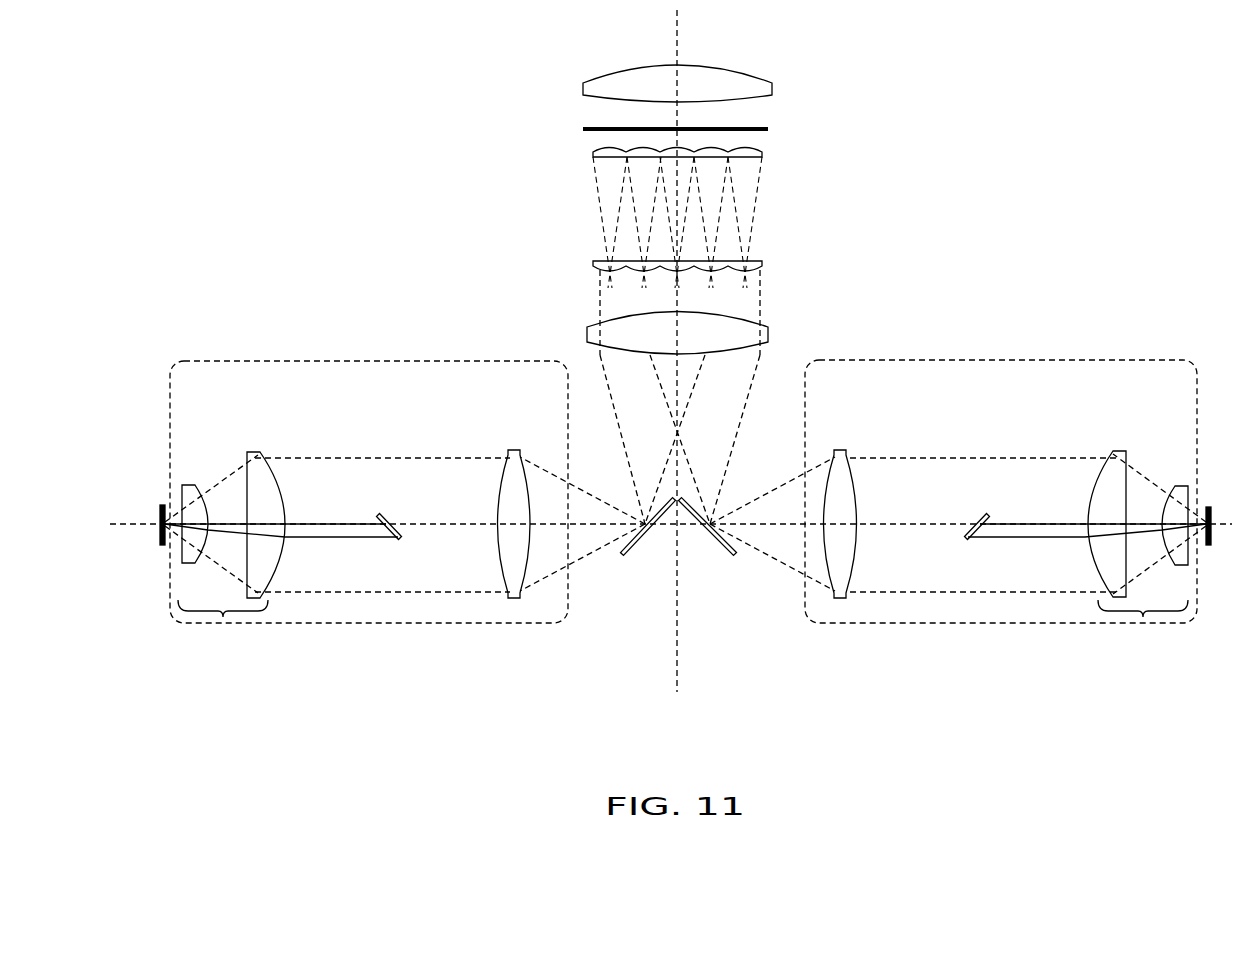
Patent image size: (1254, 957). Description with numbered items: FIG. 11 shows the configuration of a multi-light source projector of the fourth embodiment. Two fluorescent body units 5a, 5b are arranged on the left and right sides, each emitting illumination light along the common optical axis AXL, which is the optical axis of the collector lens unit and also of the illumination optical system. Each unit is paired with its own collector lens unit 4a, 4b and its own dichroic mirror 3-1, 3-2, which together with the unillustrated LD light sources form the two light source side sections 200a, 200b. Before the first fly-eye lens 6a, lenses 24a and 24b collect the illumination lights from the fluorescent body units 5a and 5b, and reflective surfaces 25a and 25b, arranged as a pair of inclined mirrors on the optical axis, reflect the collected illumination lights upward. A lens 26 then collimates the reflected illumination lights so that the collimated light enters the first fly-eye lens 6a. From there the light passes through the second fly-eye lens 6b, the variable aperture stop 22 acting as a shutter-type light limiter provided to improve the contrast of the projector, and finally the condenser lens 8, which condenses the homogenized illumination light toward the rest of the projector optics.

The condenser lens 8 is at (772, 84).
The variable aperture stop 22 is at (768, 129).
The second fly-eye lens 6b is at (762, 152).
The first fly-eye lens 6a is at (762, 262).
The lens 26 is at (768, 327).
The lens 24a is at (513, 450).
The lens 24b is at (845, 450).
The optical axis AXL is at (578, 523).
The reflective surface 25a is at (640, 560).
The reflective surface 25b is at (712, 560).
The fluorescent body unit 5a is at (1210, 547).
The fluorescent body unit 5b is at (162, 547).
The collector lens unit 4a is at (1138, 556).
The collector lens unit 4b is at (231, 554).
The illumination optical system 200a is at (388, 625).
The illumination optical system 200b is at (1003, 625).
The dichroic mirror 3-1 is at (398, 542).
The dichroic mirror 3-2 is at (967, 542).